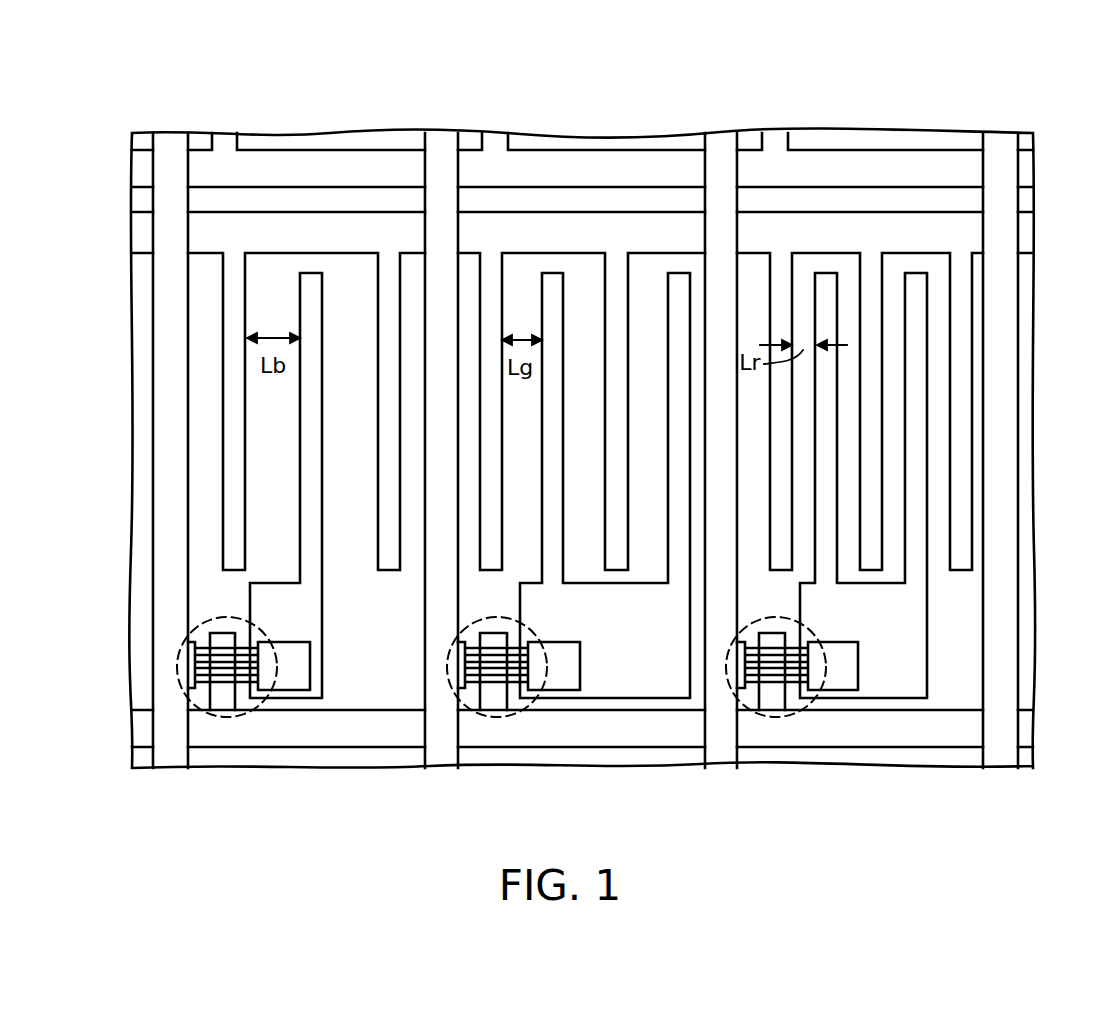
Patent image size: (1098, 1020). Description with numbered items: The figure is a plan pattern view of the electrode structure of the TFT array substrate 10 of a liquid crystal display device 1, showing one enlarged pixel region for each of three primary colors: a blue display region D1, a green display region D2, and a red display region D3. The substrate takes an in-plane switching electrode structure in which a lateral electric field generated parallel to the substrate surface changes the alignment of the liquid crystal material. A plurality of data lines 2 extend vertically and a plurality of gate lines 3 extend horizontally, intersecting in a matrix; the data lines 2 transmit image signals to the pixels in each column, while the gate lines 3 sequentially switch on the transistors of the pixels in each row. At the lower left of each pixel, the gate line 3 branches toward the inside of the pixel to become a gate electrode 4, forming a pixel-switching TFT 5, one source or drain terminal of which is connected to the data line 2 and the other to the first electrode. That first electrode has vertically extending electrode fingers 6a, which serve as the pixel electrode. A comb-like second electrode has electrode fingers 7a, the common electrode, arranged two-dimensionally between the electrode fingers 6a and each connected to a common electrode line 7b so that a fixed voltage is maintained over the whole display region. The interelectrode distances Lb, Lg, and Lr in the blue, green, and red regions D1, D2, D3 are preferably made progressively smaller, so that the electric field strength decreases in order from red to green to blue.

The liquid crystal display device 1 is at (1000, 77).
The TFT array substrate 10 is at (893, 123).
The data line 2 is at (167, 147).
The gate line 3 is at (333, 165).
The gate electrode 4 is at (227, 673).
The pixel-switching TFT 5 is at (267, 712).
The electrode fingers (pixel electrode) 6a is at (312, 303).
The electrode fingers (common electrode) 7a is at (392, 508).
The common electrode line 7b is at (595, 232).
The blue display region D1 is at (312, 773).
The green display region D2 is at (594, 773).
The red display region D3 is at (889, 773).